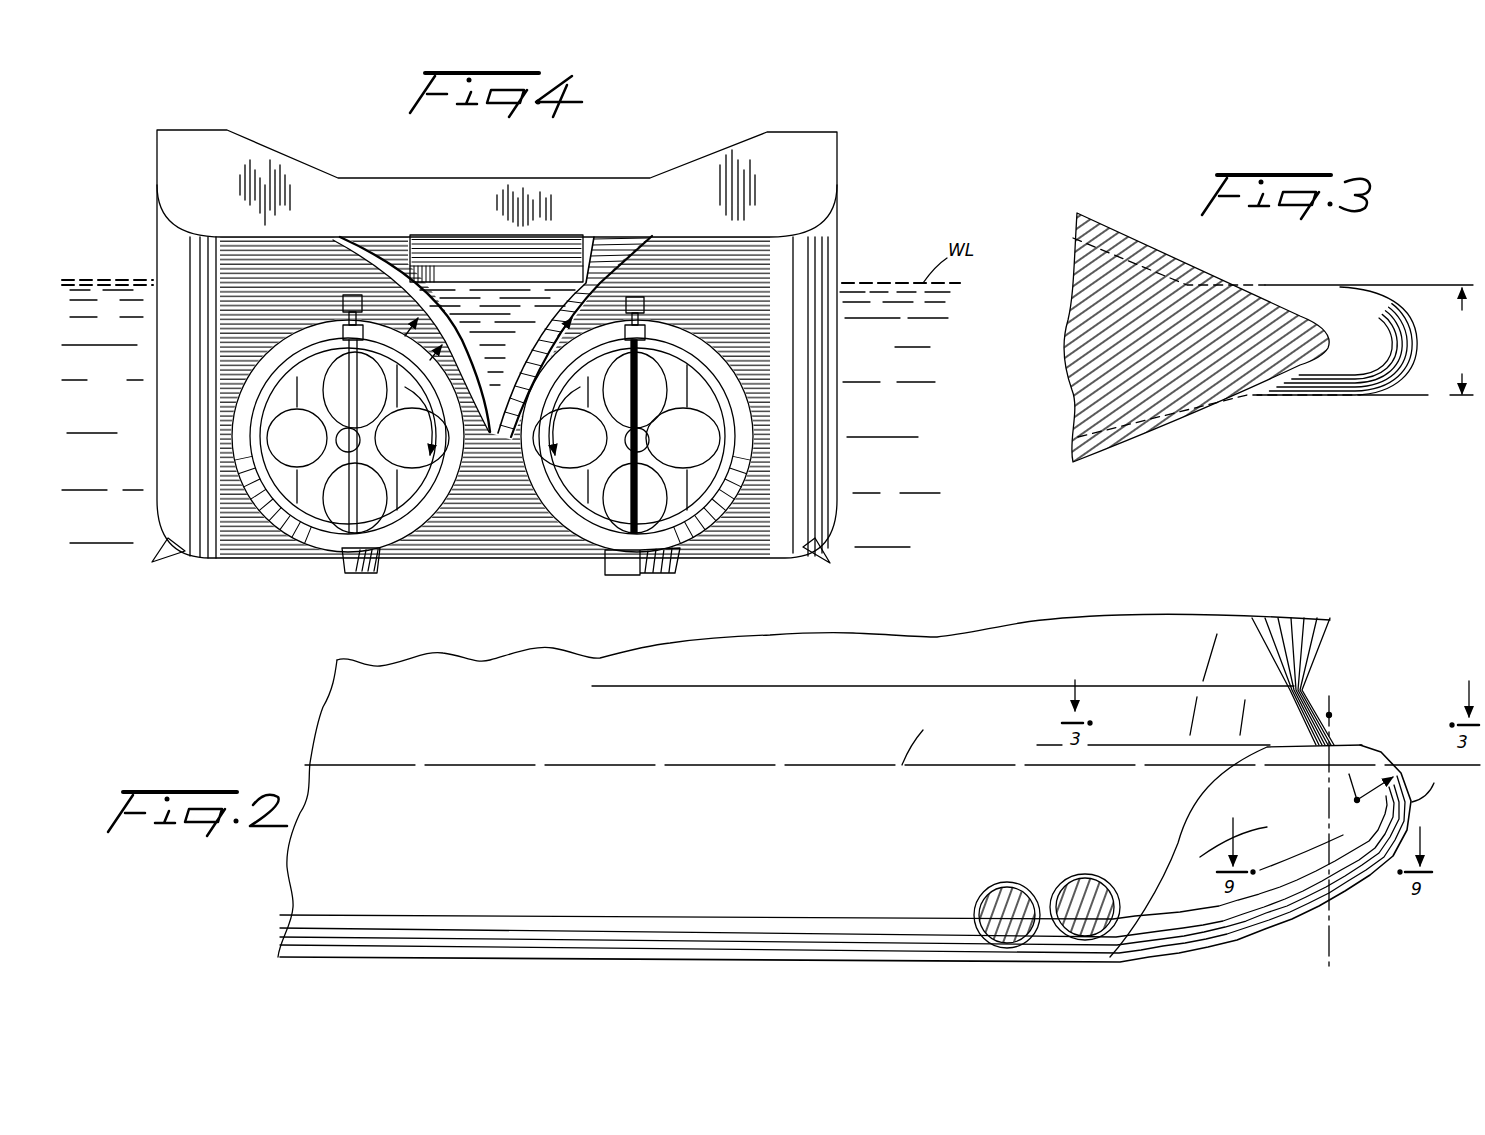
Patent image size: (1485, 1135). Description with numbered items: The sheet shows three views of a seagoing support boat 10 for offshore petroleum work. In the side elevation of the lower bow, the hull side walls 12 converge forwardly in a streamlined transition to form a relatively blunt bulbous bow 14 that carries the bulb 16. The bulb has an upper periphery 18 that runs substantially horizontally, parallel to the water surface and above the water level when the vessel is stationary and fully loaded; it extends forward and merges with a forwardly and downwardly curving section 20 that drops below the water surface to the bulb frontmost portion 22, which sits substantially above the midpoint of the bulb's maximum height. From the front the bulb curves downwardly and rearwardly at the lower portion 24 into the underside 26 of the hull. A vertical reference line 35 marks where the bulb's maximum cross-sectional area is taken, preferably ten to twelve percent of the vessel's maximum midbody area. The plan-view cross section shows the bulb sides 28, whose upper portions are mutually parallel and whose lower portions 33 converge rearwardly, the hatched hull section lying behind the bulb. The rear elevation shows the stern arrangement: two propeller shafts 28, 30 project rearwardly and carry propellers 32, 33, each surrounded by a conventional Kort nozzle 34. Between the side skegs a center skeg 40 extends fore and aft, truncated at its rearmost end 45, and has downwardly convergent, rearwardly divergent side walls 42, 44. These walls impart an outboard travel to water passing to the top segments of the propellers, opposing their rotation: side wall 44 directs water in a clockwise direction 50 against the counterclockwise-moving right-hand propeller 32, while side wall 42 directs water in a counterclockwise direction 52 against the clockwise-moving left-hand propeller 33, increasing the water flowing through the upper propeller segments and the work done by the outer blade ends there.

In FIG. 4, the support boat 10 is at (882, 176).
In FIG. 2, the support boat 10 is at (1257, 612).
In FIG. 3, the side walls 12 is at (1117, 224).
In FIG. 2, the side walls 12 is at (1291, 702).
In FIG. 3, the bulbous bow 14 is at (1333, 269).
In FIG. 3, the bulb 16 is at (1408, 374).
In FIG. 2, the bulb 16 is at (1343, 852).
In FIG. 2, the upper periphery 18 is at (1361, 745).
In FIG. 2, the forwardly and downwardly curving section 20 is at (1399, 764).
In FIG. 2, the bulb frontmost portion 22 is at (1413, 819).
In FIG. 2, the downwardly and rearwardly curving portion 24 is at (1343, 891).
In FIG. 2, the underside 26 is at (923, 961).
In FIG. 4, the bulb sides 28 is at (580, 387).
In FIG. 3, the bulb sides 28 is at (1337, 292).
In FIG. 4, the propeller shaft 30 is at (300, 518).
In FIG. 4, the propeller 32 is at (673, 460).
In FIG. 4, the propeller 33 is at (342, 510).
In FIG. 4, the Kort nozzle 34 is at (248, 553).
In FIG. 2, the vertical reference line 35 is at (1335, 716).
In FIG. 4, the center skeg 40 is at (483, 422).
In FIG. 4, the side wall 42 is at (337, 240).
In FIG. 4, the side wall 44 is at (545, 318).
In FIG. 4, the rearmost end 45 is at (505, 293).
In FIG. 4, the clockwise direction 50 is at (597, 357).
In FIG. 4, the counterclockwise direction 52 is at (443, 347).